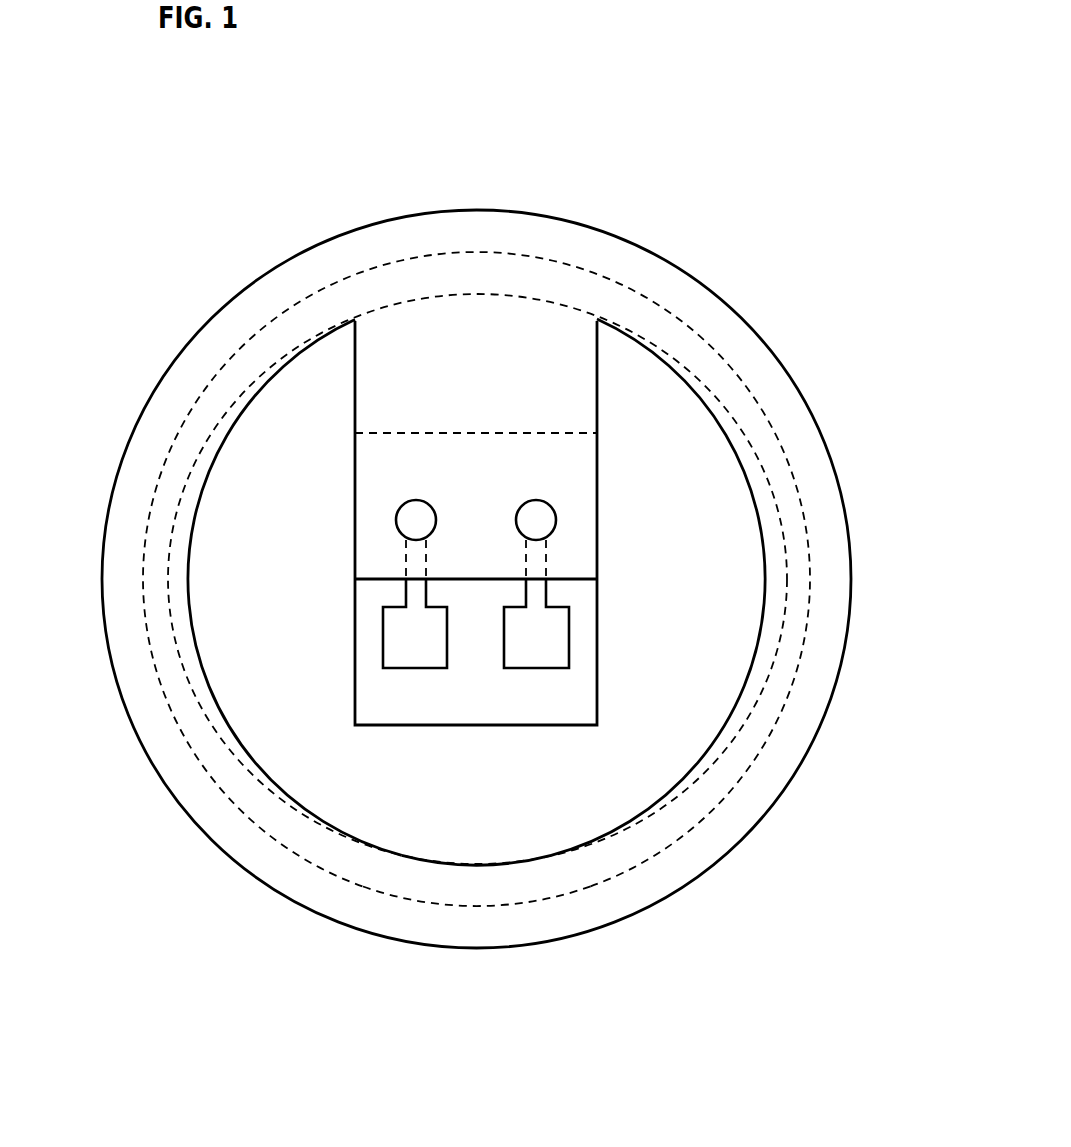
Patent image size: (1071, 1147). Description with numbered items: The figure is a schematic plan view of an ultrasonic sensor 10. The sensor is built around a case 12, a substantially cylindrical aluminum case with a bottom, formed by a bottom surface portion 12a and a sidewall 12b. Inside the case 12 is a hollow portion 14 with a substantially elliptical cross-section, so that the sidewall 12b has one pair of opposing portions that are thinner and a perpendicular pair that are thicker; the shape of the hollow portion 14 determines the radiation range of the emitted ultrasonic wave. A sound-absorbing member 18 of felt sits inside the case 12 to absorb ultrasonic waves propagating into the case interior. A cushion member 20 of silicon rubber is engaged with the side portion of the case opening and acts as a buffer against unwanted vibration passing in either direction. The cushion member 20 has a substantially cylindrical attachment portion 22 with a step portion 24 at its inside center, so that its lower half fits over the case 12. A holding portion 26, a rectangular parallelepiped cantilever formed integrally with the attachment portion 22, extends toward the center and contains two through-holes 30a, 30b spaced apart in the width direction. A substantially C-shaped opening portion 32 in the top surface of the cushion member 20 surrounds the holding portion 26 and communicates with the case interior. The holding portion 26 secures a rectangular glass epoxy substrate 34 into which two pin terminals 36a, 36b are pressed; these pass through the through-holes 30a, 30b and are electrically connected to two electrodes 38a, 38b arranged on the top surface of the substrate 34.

The ultrasonic sensor 10 is at (499, 100).
The case 12 is at (466, 629).
The bottom surface portion 12a is at (464, 822).
The sidewall 12b is at (537, 905).
The hollow portion 14 is at (550, 800).
The sound-absorbing member 18 is at (590, 787).
The cushion member 20 is at (238, 291).
The attachment portion 22 is at (223, 337).
The step portion 24 is at (218, 390).
The holding portion 26 is at (528, 370).
The through-hole 30a is at (229, 494).
The through-hole 30b is at (722, 495).
The opening portion 32 is at (320, 777).
The substrate 34 is at (578, 702).
The pin terminal 36a is at (415, 520).
The pin terminal 36b is at (539, 522).
The electrode 38a is at (410, 640).
The electrode 38b is at (537, 642).